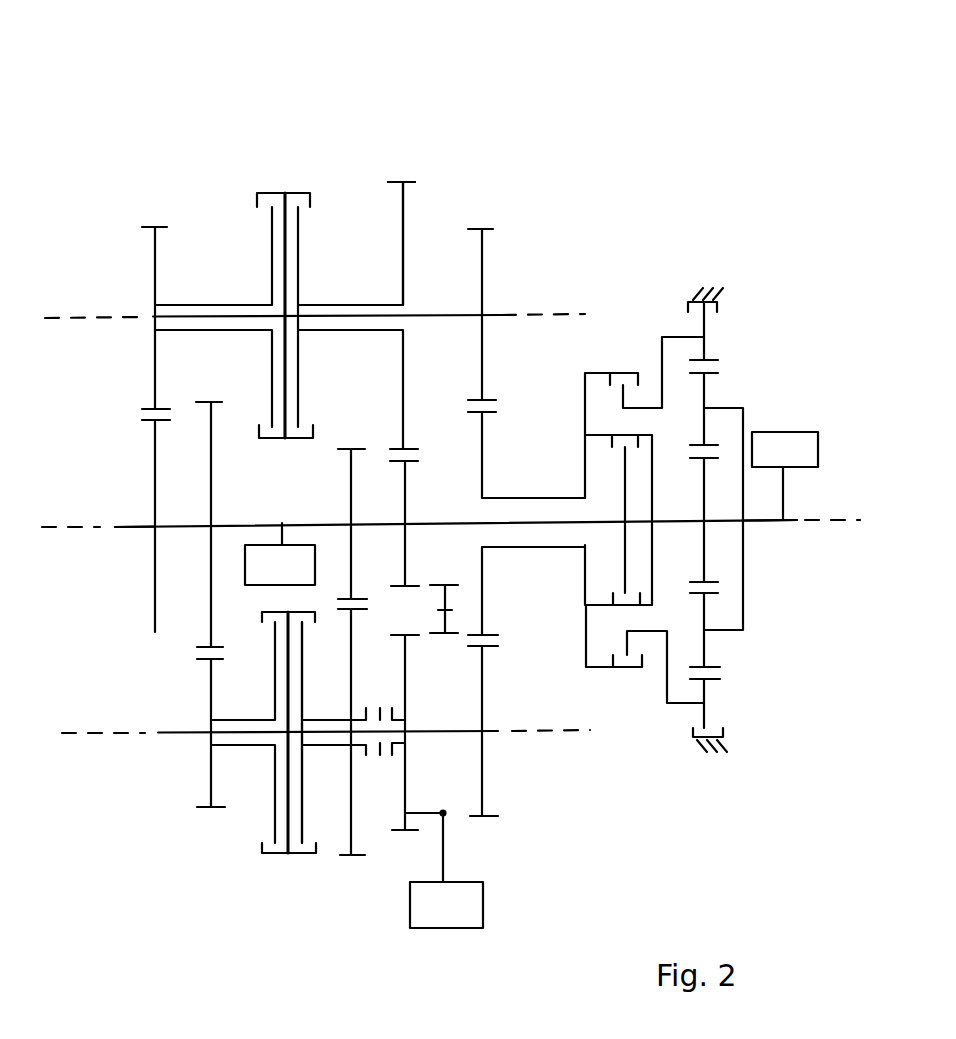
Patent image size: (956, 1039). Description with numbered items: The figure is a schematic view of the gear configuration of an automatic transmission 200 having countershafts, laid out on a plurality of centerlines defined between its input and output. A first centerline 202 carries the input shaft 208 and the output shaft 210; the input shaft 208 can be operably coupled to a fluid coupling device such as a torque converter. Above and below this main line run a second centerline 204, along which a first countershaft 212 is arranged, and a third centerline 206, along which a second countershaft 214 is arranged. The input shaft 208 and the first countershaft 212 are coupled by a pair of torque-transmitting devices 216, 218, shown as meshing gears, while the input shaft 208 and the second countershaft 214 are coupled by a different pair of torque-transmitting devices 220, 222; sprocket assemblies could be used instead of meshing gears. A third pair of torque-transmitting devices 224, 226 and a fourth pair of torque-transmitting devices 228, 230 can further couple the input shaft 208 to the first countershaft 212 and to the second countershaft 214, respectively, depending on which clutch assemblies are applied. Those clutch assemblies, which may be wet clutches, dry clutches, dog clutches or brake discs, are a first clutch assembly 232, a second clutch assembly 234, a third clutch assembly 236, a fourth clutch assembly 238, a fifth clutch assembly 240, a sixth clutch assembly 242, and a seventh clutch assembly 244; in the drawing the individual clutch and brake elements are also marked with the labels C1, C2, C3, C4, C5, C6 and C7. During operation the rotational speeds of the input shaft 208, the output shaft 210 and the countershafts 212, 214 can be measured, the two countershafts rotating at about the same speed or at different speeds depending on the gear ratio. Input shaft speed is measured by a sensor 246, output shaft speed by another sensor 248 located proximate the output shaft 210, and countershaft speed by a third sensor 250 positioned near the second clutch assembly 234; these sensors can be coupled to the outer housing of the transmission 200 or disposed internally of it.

The transmission 200 is at (114, 157).
The first centerline 202 is at (48, 527).
The second centerline 204 is at (74, 318).
The third centerline 206 is at (76, 733).
The input shaft 208 is at (126, 530).
The output shaft 210 is at (763, 520).
The first countershaft 212 is at (436, 314).
The second countershaft 214 is at (440, 733).
The torque-transmitting device 216 is at (155, 474).
The torque-transmitting device 218 is at (155, 355).
The torque-transmitting device 220 is at (212, 497).
The torque-transmitting device 222 is at (212, 695).
The torque-transmitting device 224 is at (403, 392).
The torque-transmitting device 226 is at (406, 560).
The torque-transmitting device 228 is at (350, 505).
The torque-transmitting device 230 is at (351, 650).
The first clutch assembly 232 is at (329, 208).
The second clutch assembly 234 is at (318, 831).
The third clutch assembly 236 is at (231, 201).
The fourth clutch assembly 238 is at (251, 840).
The fifth clutch assembly 240 is at (659, 500).
The sixth clutch assembly 242 is at (728, 326).
The seventh clutch assembly 244 is at (569, 409).
The sensor 246 is at (280, 554).
The sensor 248 is at (785, 476).
The third sensor 250 is at (444, 870).
The clutch C1 is at (309, 180).
The clutch C2 is at (319, 874).
The clutch C3 is at (259, 180).
The clutch C4 is at (677, 430).
The clutch C5 is at (269, 874).
The brake C6 is at (667, 278).
The clutch C7 is at (613, 361).